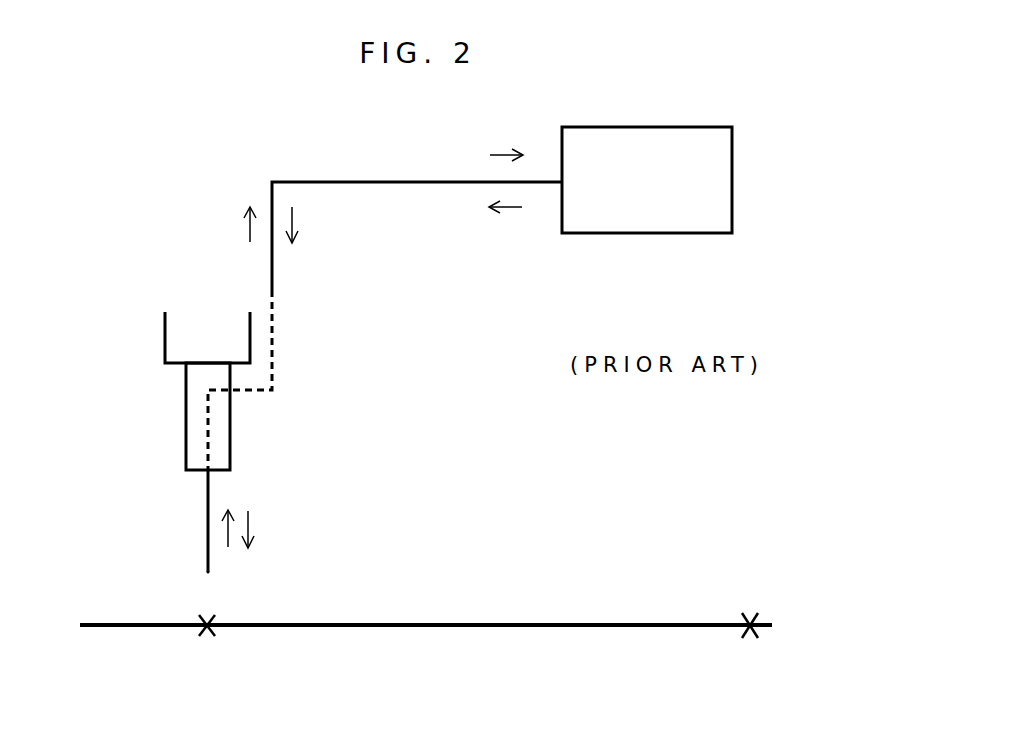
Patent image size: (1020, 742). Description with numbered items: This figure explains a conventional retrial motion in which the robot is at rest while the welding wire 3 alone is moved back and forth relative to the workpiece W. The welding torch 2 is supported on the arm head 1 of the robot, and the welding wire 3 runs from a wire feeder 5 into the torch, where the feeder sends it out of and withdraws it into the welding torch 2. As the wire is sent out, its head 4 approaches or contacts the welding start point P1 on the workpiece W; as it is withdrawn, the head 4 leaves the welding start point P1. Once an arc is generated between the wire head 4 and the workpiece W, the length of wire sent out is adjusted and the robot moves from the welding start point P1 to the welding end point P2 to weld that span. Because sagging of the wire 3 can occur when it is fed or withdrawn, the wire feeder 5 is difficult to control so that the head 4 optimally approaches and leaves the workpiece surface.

The arm head 1 is at (165, 346).
The welding torch 2 is at (186, 424).
The welding wire 3 is at (404, 182).
The wire head 4 is at (207, 572).
The wire feeder 5 is at (636, 233).
The workpiece W is at (510, 665).
The welding start point P1 is at (187, 636).
The welding end point P2 is at (750, 644).